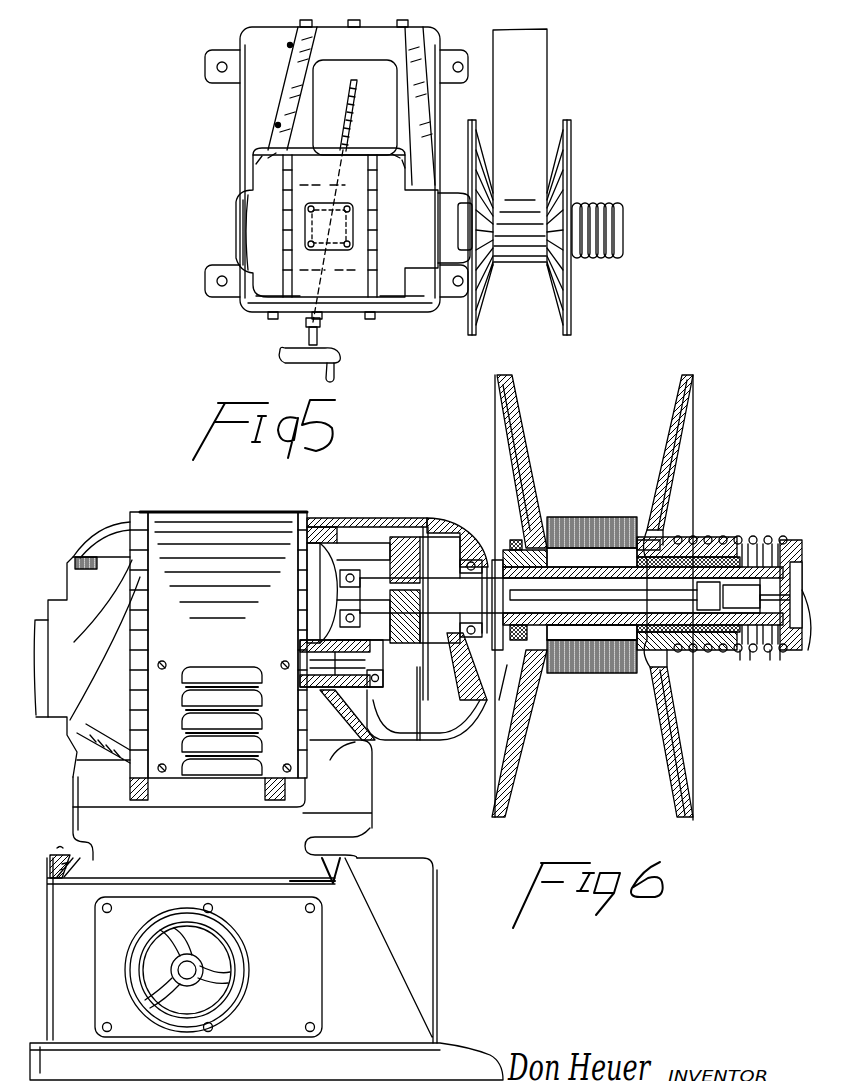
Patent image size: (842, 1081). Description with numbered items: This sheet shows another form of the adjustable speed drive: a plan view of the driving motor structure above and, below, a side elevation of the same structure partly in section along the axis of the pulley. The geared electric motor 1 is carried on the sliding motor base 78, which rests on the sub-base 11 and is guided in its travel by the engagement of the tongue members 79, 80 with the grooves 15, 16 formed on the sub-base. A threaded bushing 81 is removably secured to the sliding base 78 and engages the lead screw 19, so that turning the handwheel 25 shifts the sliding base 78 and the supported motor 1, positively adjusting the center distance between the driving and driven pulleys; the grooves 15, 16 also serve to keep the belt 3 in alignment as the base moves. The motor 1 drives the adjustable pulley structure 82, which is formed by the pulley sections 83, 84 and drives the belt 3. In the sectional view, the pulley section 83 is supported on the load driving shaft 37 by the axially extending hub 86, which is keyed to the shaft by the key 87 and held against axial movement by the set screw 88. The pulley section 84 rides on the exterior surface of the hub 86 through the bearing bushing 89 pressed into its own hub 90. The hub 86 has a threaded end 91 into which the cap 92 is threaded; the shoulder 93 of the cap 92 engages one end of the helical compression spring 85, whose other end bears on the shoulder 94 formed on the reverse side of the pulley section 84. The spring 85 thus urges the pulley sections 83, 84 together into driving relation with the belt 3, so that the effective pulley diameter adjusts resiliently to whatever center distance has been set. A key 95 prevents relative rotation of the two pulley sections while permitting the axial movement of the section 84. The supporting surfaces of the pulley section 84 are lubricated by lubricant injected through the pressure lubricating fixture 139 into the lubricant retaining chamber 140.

In FIG. 5, the geared electric motor 1 is at (262, 212).
In FIG. 6, the geared electric motor 1 is at (192, 512).
In FIG. 5, the belt 3 is at (548, 50).
In FIG. 6, the belt 3 is at (570, 517).
In FIG. 5, the sub-base 11 is at (248, 108).
In FIG. 6, the sub-base 11 is at (436, 953).
In FIG. 5, the groove 15 is at (300, 50).
In FIG. 6, the groove 15 is at (88, 882).
In FIG. 5, the groove 16 is at (412, 60).
In FIG. 6, the groove 16 is at (327, 886).
In FIG. 5, the lead screw 19 is at (350, 105).
In FIG. 5, the handwheel 25 is at (341, 359).
In FIG. 6, the handwheel 25 is at (240, 951).
In FIG. 6, the load driving shaft 37 is at (486, 555).
In FIG. 5, the sliding motor base 78 is at (252, 168).
In FIG. 6, the sliding motor base 78 is at (375, 826).
In FIG. 6, the tongue member 79 is at (103, 877).
In FIG. 6, the tongue member 80 is at (318, 878).
In FIG. 5, the threaded bushing 81 is at (333, 215).
In FIG. 5, the adjustable pulley structure 82 is at (520, 299).
In FIG. 6, the adjustable pulley structure 82 is at (590, 741).
In FIG. 5, the pulley section 83 is at (476, 325).
In FIG. 6, the pulley section 83 is at (512, 788).
In FIG. 5, the pulley section 84 is at (565, 325).
In FIG. 6, the pulley section 84 is at (670, 785).
In FIG. 5, the helical compression spring 85 is at (585, 205).
In FIG. 6, the helical compression spring 85 is at (730, 537).
In FIG. 6, the hub 86 is at (553, 628).
In FIG. 6, the key 87 is at (497, 650).
In FIG. 6, the set screw 88 is at (527, 640).
In FIG. 6, the bearing bushing 89 is at (640, 627).
In FIG. 6, the hub 90 is at (702, 538).
In FIG. 6, the threaded end 91 is at (745, 652).
In FIG. 6, the cap 92 is at (778, 652).
In FIG. 6, the shoulder 93 is at (792, 538).
In FIG. 6, the shoulder 94 is at (674, 535).
In FIG. 6, the key 95 is at (540, 570).
In FIG. 6, the pressure lubricating fixture 139 is at (806, 617).
In FIG. 6, the lubricant retaining chamber 140 is at (580, 595).